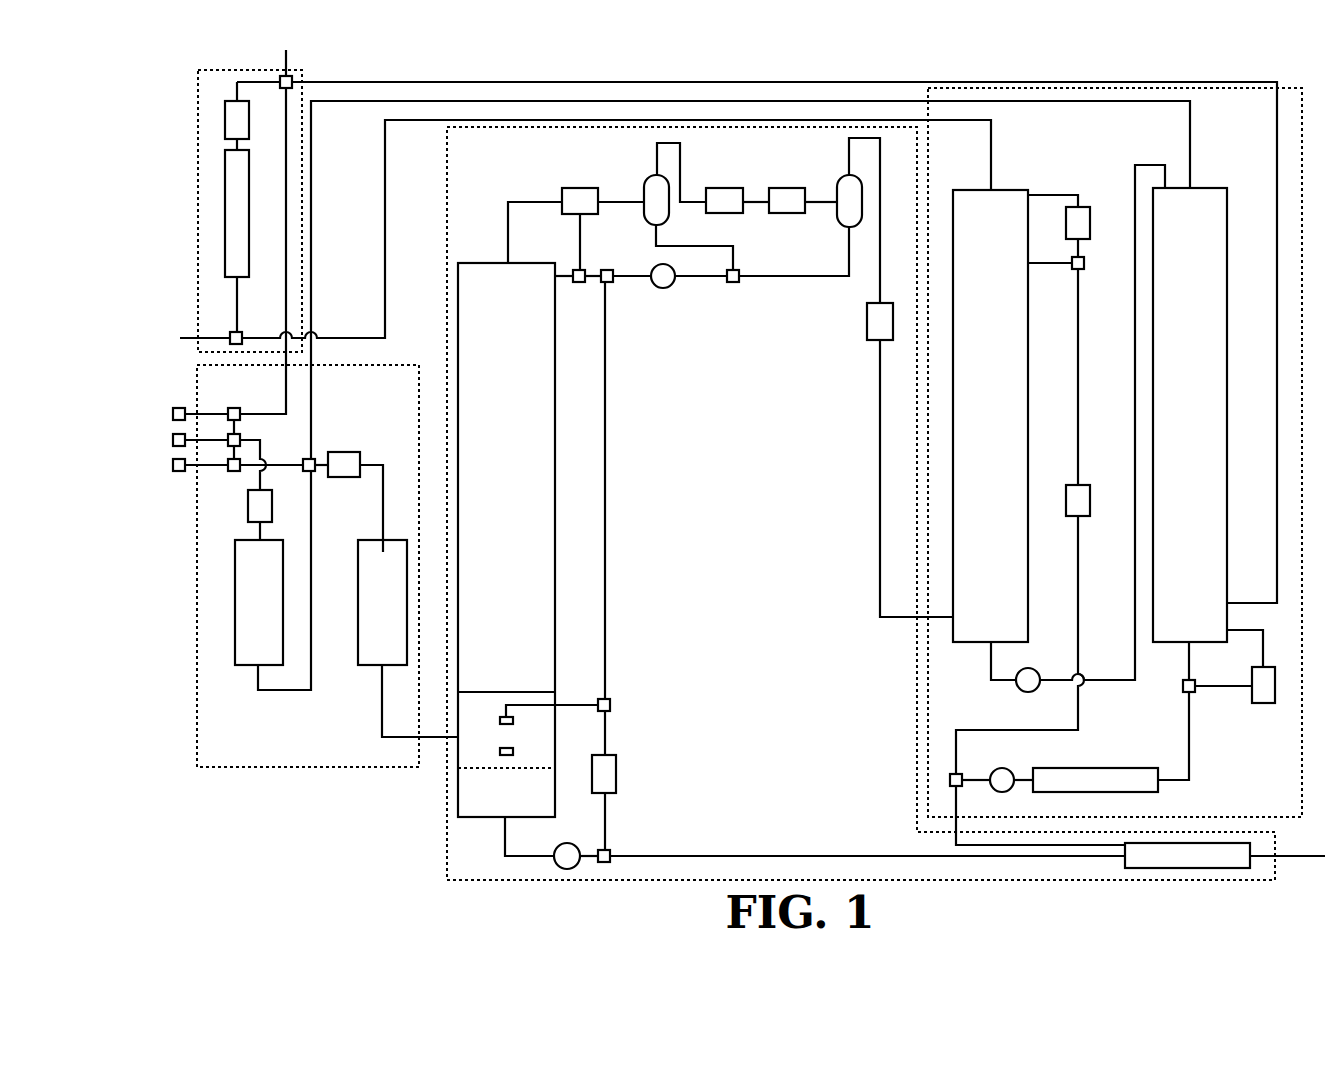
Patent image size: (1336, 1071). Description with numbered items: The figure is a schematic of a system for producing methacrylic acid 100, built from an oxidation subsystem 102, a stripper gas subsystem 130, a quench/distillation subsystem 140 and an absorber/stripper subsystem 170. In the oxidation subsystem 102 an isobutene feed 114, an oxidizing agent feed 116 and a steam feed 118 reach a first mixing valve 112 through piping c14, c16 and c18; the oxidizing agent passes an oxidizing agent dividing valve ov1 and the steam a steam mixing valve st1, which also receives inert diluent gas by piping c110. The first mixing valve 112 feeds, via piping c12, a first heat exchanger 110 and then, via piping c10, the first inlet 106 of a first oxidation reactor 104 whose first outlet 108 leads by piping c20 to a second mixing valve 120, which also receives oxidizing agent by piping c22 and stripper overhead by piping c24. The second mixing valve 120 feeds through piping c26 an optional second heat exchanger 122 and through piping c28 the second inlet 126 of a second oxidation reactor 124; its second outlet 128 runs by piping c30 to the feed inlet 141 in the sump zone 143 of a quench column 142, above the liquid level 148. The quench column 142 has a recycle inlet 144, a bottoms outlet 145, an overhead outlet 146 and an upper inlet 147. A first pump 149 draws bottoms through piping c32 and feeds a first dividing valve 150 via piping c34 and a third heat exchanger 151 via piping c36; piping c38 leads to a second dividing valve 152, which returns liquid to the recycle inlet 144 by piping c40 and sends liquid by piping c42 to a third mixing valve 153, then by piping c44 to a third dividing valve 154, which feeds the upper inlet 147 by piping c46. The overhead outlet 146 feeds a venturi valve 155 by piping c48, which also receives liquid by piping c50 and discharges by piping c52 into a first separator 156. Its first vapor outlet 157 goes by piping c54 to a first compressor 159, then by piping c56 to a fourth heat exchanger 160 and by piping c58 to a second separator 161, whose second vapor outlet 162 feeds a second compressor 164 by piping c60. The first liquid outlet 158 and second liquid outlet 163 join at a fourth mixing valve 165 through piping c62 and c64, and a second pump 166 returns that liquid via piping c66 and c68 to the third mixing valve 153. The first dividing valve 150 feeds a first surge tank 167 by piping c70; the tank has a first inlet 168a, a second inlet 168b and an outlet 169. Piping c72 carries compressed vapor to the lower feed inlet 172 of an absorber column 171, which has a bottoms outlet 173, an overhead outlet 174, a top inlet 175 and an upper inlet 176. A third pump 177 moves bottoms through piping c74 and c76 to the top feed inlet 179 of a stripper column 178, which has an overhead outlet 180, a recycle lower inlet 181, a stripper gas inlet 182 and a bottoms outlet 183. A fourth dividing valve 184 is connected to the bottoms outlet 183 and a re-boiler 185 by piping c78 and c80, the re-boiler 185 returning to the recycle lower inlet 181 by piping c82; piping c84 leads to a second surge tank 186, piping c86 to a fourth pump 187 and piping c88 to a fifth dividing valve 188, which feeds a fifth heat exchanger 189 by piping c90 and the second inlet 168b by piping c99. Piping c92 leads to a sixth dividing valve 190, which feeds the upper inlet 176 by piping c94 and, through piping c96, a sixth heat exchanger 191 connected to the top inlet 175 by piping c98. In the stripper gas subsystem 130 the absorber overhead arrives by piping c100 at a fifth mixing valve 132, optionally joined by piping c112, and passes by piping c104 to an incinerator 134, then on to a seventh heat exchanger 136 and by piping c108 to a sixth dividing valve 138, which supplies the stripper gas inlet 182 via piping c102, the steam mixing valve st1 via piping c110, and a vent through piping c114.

The system for producing methacrylic acid 100 is at (418, 806).
The oxidation subsystem 102 is at (308, 566).
The first oxidation reactor 104 is at (259, 602).
The first inlet 106 is at (258, 538).
The first outlet 108 is at (256, 664).
The first heat exchanger 110 is at (274, 505).
The first mixing valve 112 is at (240, 438).
The isobutene feed 114 is at (172, 445).
The oxidizing agent feed 116 is at (182, 470).
The steam feed 118 is at (172, 410).
The second mixing valve 120 is at (313, 460).
The second heat exchanger 122 is at (344, 458).
The second oxidation reactor 124 is at (382, 602).
The second inlet 126 is at (378, 545).
The second outlet 128 is at (380, 660).
The stripper gas subsystem 130 is at (250, 211).
The fifth mixing valve 132 is at (230, 334).
The incinerator 134 is at (228, 214).
The seventh heat exchanger 136 is at (240, 122).
The sixth dividing valve 138 is at (292, 88).
The quench/distillation subsystem 140 is at (861, 503).
The feed inlet 141 is at (514, 752).
The quench column 142 is at (506, 540).
The sump zone 143 is at (505, 690).
The recycle inlet 144 is at (500, 718).
The bottoms outlet 145 is at (505, 816).
The overhead outlet 146 is at (500, 270).
The upper inlet 147 is at (560, 278).
The liquid level 148 is at (495, 770).
The first pump 149 is at (556, 863).
The first dividing valve 150 is at (608, 850).
The third heat exchanger 151 is at (610, 768).
The second dividing valve 152 is at (610, 700).
The third mixing valve 153 is at (615, 280).
The third dividing valve 154 is at (578, 272).
The venturi valve 155 is at (578, 200).
The first separator 156 is at (655, 200).
The first vapor outlet 157 is at (725, 200).
The first liquid outlet 158 is at (610, 276).
The first compressor 159 is at (775, 200).
The fourth heat exchanger 160 is at (798, 186).
The second separator 161 is at (848, 200).
The second vapor outlet 162 is at (862, 180).
The second liquid outlet 163 is at (848, 235).
The second compressor 164 is at (878, 325).
The fourth mixing valve 165 is at (740, 282).
The second pump 166 is at (670, 285).
The first surge tank 167 is at (1190, 856).
The first inlet 168a is at (1130, 846).
The second inlet 168b is at (1140, 847).
The outlet 169 is at (1275, 857).
The absorber/stripper subsystem 170 is at (1115, 452).
The absorber column 171 is at (990, 416).
The lower feed inlet 172 is at (955, 617).
The bottoms outlet 173 is at (985, 645).
The overhead outlet 174 is at (978, 192).
The top inlet 175 is at (1025, 198).
The upper inlet 176 is at (1035, 266).
The third pump 177 is at (1025, 692).
The stripper column 178 is at (1190, 415).
The top feed inlet 179 is at (1168, 192).
The overhead outlet 180 is at (1193, 185).
The recycle lower inlet 181 is at (1226, 630).
The stripper gas inlet 182 is at (1226, 602).
The bottoms outlet 183 is at (1178, 645).
The fourth dividing valve 184 is at (1182, 690).
The re-boiler 185 is at (1262, 686).
The second surge tank 186 is at (1095, 770).
The fourth pump 187 is at (1010, 770).
The fifth dividing valve 188 is at (952, 776).
The fifth heat exchanger 189 is at (1075, 500).
The sixth dividing valve 190 is at (1086, 266).
The sixth heat exchanger 191 is at (1082, 220).
The piping c10 is at (286, 540).
The piping c12 is at (312, 425).
The piping c14 is at (210, 414).
The piping c16 is at (250, 448).
The piping c18 is at (222, 436).
The piping c20 is at (309, 690).
The piping c22 is at (250, 466).
The piping c24 is at (312, 238).
The piping c26 is at (322, 470).
The piping c28 is at (370, 466).
The piping c30 is at (375, 740).
The piping c32 is at (522, 860).
The piping c34 is at (588, 858).
The piping c36 is at (608, 820).
The piping c38 is at (608, 730).
The piping c40 is at (603, 700).
The piping c42 is at (608, 530).
The piping c44 is at (600, 280).
The piping c46 is at (565, 280).
The piping c48 is at (505, 202).
The piping c50 is at (582, 242).
The piping c52 is at (620, 202).
The piping c54 is at (693, 148).
The piping c56 is at (757, 200).
The piping c58 is at (818, 202).
The piping c60 is at (865, 138).
The piping c62 is at (670, 246).
The piping c64 is at (770, 278).
The piping c66 is at (640, 280).
The piping c68 is at (620, 282).
The piping c70 is at (760, 855).
The piping c72 is at (878, 480).
The piping c74 is at (994, 666).
The piping c76 is at (1126, 466).
The piping c78 is at (1192, 663).
The piping c80 is at (1222, 688).
The piping c82 is at (1265, 650).
The piping c84 is at (1192, 755).
The piping c86 is at (1022, 784).
The piping c88 is at (976, 778).
The piping c90 is at (1080, 630).
The piping c92 is at (1076, 385).
The piping c94 is at (1065, 266).
The piping c96 is at (1086, 258).
The piping c98 is at (1048, 194).
The piping c99 is at (1020, 846).
The piping c100 is at (387, 218).
The piping c102 is at (440, 82).
The piping c104 is at (238, 318).
The piping c108 is at (248, 90).
The piping c110 is at (288, 242).
The piping c112 is at (184, 336).
The piping c114 is at (292, 60).
The oxidizing agent dividing valve ov1 is at (240, 468).
The steam mixing valve st1 is at (318, 352).